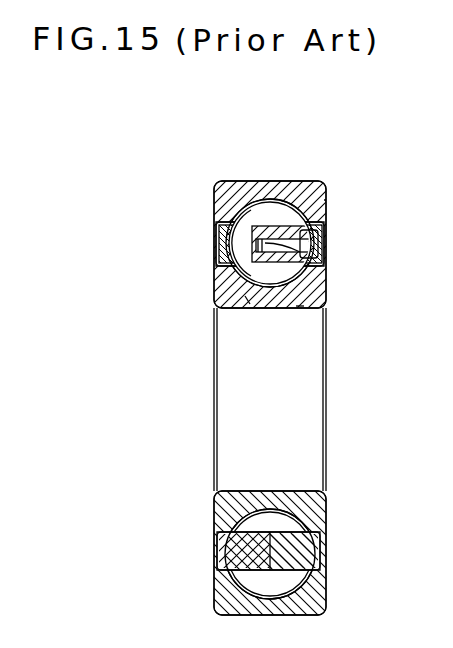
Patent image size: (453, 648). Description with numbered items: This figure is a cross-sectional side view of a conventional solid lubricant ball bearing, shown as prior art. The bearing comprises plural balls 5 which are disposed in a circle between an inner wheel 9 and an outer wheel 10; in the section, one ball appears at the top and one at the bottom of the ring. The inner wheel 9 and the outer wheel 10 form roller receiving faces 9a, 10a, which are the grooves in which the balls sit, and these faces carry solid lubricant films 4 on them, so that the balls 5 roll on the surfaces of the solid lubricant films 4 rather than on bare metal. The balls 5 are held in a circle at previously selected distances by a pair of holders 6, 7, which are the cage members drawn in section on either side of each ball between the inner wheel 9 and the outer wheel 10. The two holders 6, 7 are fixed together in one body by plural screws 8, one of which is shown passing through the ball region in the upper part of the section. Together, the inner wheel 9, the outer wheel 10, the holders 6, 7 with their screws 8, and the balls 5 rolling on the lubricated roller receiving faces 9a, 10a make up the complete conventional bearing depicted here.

The solid lubricant film 4 is at (268, 203).
The ball 5 is at (232, 197).
The holder 6 is at (218, 243).
The holder 7 is at (327, 200).
The screw 8 is at (327, 277).
The inner wheel 9 is at (300, 306).
The roller receiving face 9a is at (244, 300).
The outer wheel 10 is at (307, 192).
The roller receiving face 10a is at (284, 207).